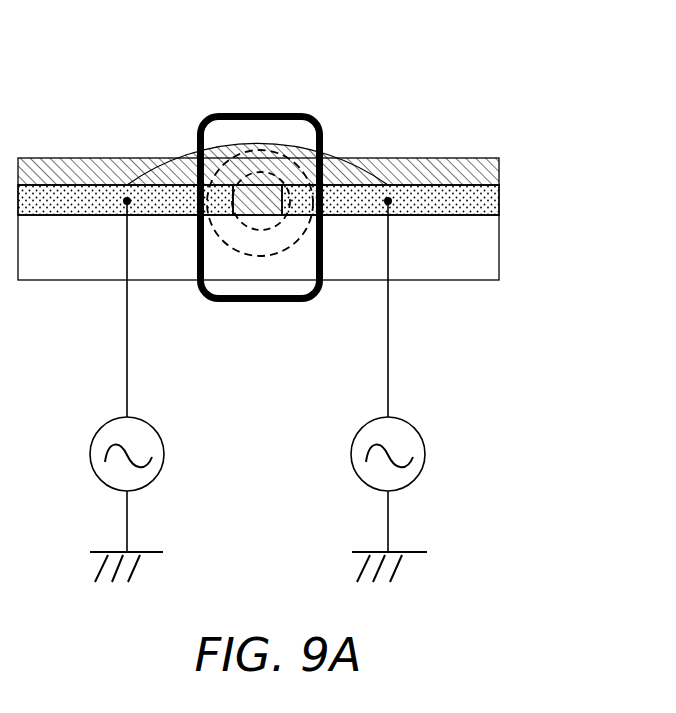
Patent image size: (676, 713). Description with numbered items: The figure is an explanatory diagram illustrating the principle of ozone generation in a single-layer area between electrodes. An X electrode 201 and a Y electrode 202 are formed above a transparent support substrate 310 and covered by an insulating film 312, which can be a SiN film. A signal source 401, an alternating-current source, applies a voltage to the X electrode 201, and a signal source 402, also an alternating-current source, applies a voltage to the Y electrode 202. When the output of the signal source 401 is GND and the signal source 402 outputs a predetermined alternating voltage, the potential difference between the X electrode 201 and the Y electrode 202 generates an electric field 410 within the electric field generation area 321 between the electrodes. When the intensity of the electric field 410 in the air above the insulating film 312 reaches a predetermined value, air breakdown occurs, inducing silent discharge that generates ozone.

The X electrode 201 is at (258, 146).
The Y electrode 202 is at (262, 146).
The transparent support substrate 310 is at (58, 280).
The insulating film 312 is at (499, 170).
The electric field generation area 321 is at (263, 114).
The signal source 401 is at (165, 454).
The signal source 402 is at (425, 454).
The electric field 410 is at (253, 146).